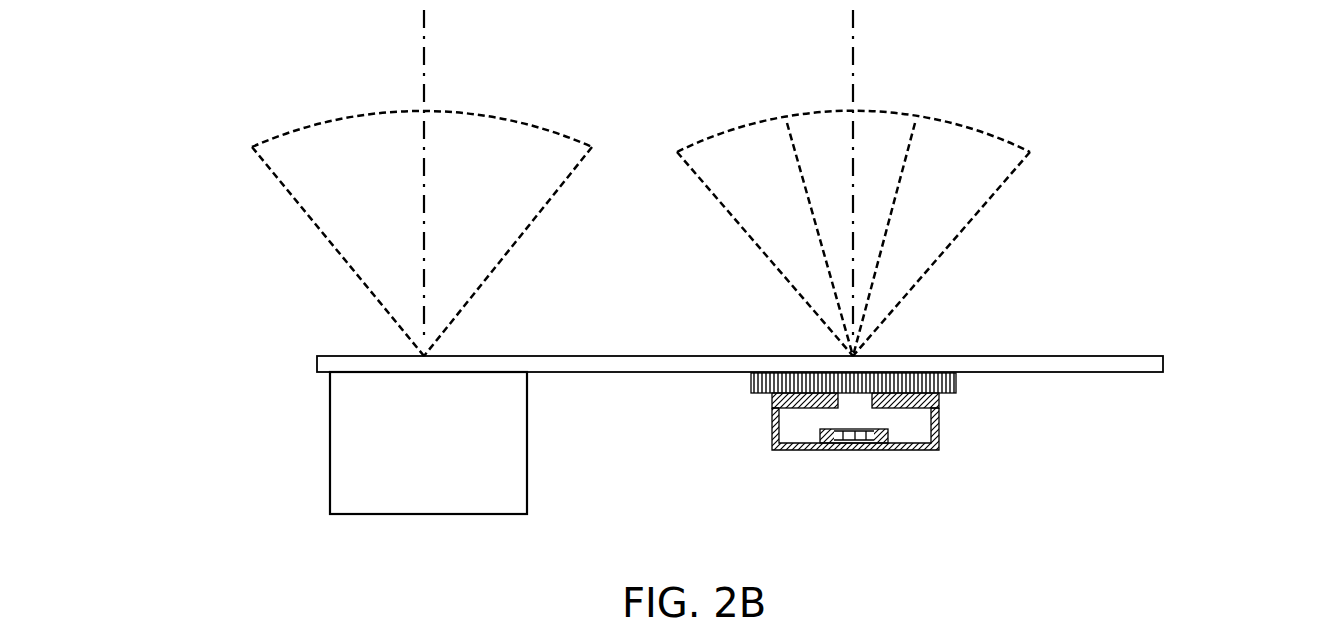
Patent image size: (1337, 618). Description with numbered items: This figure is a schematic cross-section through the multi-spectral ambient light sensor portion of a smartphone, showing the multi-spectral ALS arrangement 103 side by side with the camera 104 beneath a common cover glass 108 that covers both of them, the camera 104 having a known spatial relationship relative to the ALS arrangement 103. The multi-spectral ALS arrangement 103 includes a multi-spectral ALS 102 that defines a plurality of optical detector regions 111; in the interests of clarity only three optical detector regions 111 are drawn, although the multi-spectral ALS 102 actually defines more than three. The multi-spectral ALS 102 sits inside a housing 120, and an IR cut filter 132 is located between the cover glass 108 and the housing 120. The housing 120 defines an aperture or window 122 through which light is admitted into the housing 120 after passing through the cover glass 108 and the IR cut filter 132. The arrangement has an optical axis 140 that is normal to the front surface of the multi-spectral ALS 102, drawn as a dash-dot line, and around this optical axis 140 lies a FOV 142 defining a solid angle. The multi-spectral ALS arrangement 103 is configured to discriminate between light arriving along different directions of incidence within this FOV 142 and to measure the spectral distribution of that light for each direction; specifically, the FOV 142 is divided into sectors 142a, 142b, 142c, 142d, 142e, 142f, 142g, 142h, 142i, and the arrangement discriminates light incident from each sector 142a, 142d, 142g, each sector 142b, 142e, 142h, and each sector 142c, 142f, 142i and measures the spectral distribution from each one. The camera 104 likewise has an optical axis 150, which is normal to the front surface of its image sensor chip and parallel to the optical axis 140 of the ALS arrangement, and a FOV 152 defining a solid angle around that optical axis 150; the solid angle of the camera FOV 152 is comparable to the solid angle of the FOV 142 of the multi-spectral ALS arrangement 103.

The multi-spectral ALS 102 is at (890, 435).
The multi-spectral ALS arrangement 103 is at (884, 460).
The camera 104 is at (328, 441).
The cover glass 108 is at (1163, 364).
The optical detector regions 111 is at (837, 437).
The housing 120 is at (939, 422).
The aperture or window 122 is at (843, 405).
The IR cut filter 132 is at (957, 386).
The optical axis 140 is at (857, 52).
The FOV 142 is at (890, 194).
The sector 142a is at (703, 254).
The sector 142b is at (772, 194).
The sector 142c is at (1040, 254).
The sector 142d is at (703, 254).
The sector 142e is at (772, 194).
The sector 142f is at (1040, 254).
The sector 142g is at (803, 263).
The sector 142h is at (823, 143).
The sector 142i is at (915, 230).
The optical axis 150 is at (423, 50).
The FOV 152 is at (282, 135).